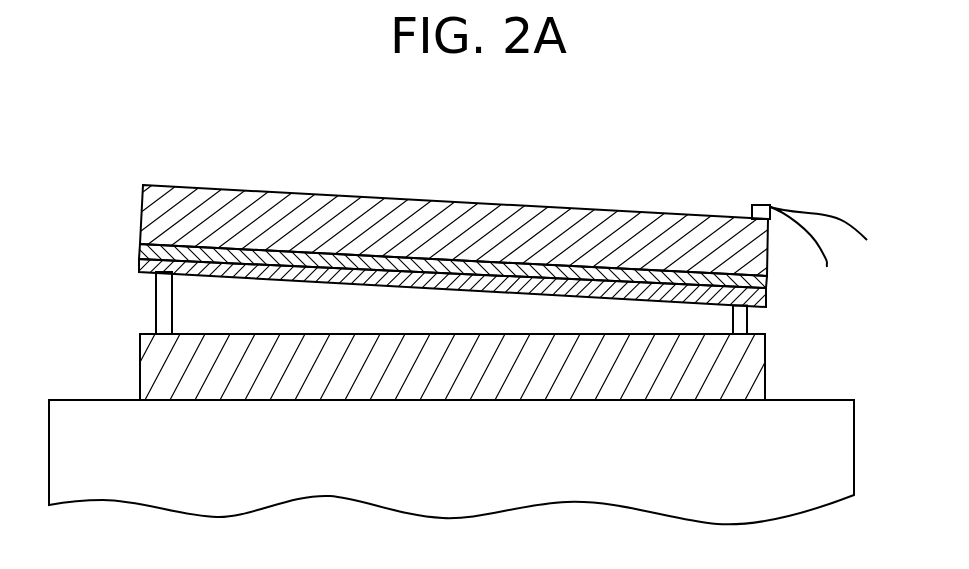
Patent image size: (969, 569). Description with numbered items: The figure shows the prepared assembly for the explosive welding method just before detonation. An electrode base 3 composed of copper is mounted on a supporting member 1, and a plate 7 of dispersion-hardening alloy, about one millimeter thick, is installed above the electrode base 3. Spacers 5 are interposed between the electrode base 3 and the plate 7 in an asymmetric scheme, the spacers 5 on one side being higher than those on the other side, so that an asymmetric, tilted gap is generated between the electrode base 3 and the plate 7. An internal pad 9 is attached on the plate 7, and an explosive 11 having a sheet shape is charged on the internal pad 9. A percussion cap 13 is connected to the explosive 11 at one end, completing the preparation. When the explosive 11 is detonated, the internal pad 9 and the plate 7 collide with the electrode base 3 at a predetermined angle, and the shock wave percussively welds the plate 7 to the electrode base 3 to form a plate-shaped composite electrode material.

The supporting member 1 is at (125, 436).
The electrode base 3 is at (733, 369).
The spacers 5 is at (153, 300).
The plate 7 is at (140, 268).
The internal pad 9 is at (140, 250).
The explosive 11 is at (523, 232).
The percussion cap 13 is at (756, 201).